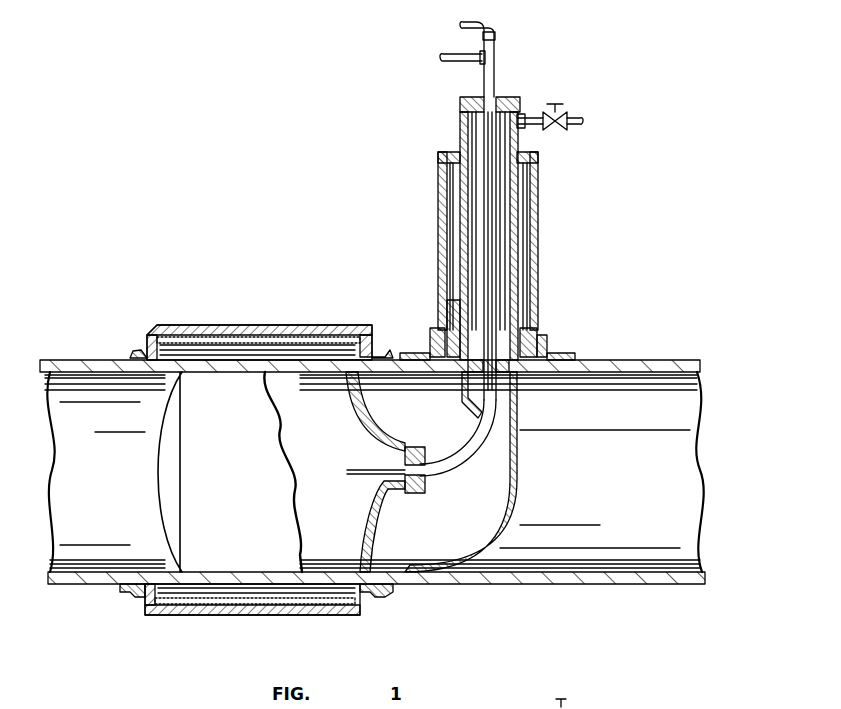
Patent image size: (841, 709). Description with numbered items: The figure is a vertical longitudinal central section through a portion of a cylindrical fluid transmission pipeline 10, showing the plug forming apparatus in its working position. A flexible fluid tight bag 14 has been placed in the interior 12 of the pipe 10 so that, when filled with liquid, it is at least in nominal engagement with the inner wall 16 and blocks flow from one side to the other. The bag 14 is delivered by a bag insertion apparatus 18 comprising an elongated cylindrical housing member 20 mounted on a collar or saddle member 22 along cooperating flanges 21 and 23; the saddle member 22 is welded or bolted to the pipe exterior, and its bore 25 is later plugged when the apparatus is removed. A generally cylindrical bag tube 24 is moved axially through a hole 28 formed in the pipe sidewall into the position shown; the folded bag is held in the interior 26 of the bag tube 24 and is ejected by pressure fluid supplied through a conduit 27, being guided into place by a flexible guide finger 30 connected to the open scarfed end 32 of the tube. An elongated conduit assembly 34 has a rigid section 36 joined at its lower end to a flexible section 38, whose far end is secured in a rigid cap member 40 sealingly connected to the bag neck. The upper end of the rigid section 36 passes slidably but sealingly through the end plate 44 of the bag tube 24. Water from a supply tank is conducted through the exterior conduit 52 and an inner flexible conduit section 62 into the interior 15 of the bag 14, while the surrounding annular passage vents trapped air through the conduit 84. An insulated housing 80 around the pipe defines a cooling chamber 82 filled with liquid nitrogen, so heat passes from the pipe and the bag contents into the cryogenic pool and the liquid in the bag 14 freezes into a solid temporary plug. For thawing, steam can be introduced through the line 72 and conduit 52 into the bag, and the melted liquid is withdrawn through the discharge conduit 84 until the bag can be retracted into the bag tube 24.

The pipeline 10 is at (80, 362).
The interior of the pipe 12 is at (626, 482).
The flexible fluid tight bag 14 is at (388, 560).
The interior of the bag 15 is at (319, 454).
The inner wall of the pipe 16 is at (248, 570).
The insertion apparatus 18 is at (540, 238).
The cylindrical housing member 20 is at (538, 302).
The flange 21 is at (548, 335).
The saddle member 22 is at (576, 355).
The flange 23 is at (562, 343).
The bag tube 24 is at (520, 205).
The bore of the saddle member 25 is at (440, 330).
The interior of the bag tube 26 is at (460, 196).
The conduit 27 is at (537, 118).
The hole 28 is at (500, 400).
The flexible guide finger 30 is at (520, 522).
The open scarfed end 32 is at (466, 455).
The conduit assembly 34 is at (474, 137).
The rigid section 36 is at (487, 256).
The flexible section 38 is at (447, 474).
The cap member 40 is at (420, 448).
The end plate 44 is at (500, 97).
The exterior conduit 52 is at (493, 24).
The flexible conduit section 62 is at (372, 474).
The line 72 is at (598, 694).
The insulated housing 80 is at (228, 328).
The cooling chamber 82 is at (298, 352).
The conduit 84 is at (470, 62).